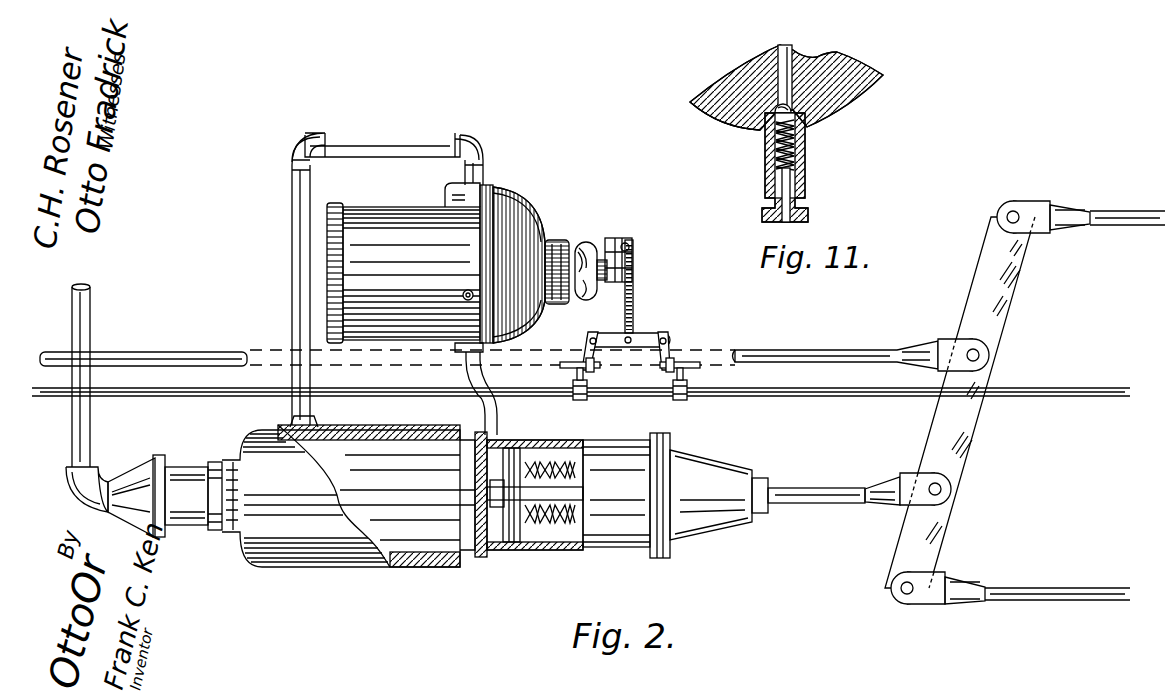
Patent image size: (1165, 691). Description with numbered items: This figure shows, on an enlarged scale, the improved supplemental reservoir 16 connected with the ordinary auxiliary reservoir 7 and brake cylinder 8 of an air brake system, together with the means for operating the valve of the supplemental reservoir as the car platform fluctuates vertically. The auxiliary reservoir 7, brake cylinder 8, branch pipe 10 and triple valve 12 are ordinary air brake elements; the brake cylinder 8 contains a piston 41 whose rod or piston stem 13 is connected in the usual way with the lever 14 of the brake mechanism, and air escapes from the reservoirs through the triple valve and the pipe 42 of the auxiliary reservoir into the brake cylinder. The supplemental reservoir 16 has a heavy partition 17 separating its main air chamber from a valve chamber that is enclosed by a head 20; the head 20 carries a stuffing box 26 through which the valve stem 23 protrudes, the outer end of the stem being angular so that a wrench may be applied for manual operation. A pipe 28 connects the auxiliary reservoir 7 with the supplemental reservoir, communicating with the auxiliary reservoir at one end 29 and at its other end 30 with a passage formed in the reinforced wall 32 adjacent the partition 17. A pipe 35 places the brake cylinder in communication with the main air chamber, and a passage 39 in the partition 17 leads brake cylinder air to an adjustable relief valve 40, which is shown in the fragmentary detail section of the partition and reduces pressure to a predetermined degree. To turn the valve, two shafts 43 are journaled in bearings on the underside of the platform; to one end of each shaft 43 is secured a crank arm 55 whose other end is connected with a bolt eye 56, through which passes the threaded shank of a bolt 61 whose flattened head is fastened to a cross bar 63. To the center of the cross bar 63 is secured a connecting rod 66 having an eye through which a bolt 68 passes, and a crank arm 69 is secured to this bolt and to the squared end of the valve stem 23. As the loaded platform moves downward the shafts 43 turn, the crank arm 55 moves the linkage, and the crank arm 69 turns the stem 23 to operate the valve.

In FIG. 2, the auxiliary reservoir 7 is at (310, 567).
In FIG. 2, the brake cylinder 8 is at (620, 548).
In FIG. 2, the branch pipe 10 is at (92, 312).
In FIG. 2, the triple valve 12 is at (132, 470).
In FIG. 2, the piston stem 13 is at (830, 503).
In FIG. 2, the lever 14 is at (962, 440).
In FIG. 11, the supplemental reservoir 16 is at (750, 120).
In FIG. 2, the supplemental reservoir 16 is at (410, 268).
In FIG. 11, the partition 17 is at (845, 90).
In FIG. 2, the head 20 is at (531, 265).
In FIG. 2, the stem 23 is at (602, 260).
In FIG. 2, the stuffing box 26 is at (582, 258).
In FIG. 2, the pipe 28 is at (292, 287).
In FIG. 2, the pipe connection to auxiliary reservoir 29 is at (316, 420).
In FIG. 2, the pipe connection to supplemental reservoir 30 is at (483, 185).
In FIG. 2, the reinforced wall 32 is at (448, 193).
In FIG. 2, the pipe 35 is at (500, 412).
In FIG. 11, the passage 39 is at (780, 70).
In FIG. 11, the relief valve 40 is at (805, 166).
In FIG. 2, the relief valve 40 is at (466, 290).
In FIG. 2, the piston 41 is at (505, 550).
In FIG. 2, the pipe 42 is at (430, 505).
In FIG. 2, the shaft 43 is at (800, 388).
In FIG. 2, the crank arm 55 is at (670, 378).
In FIG. 2, the bolt eye 56 is at (562, 366).
In FIG. 2, the bolt 61 is at (586, 352).
In FIG. 2, the cross bar 63 is at (643, 336).
In FIG. 2, the connecting rod 66 is at (633, 287).
In FIG. 2, the bolt 68 is at (630, 245).
In FIG. 2, the crank arm 69 is at (632, 249).